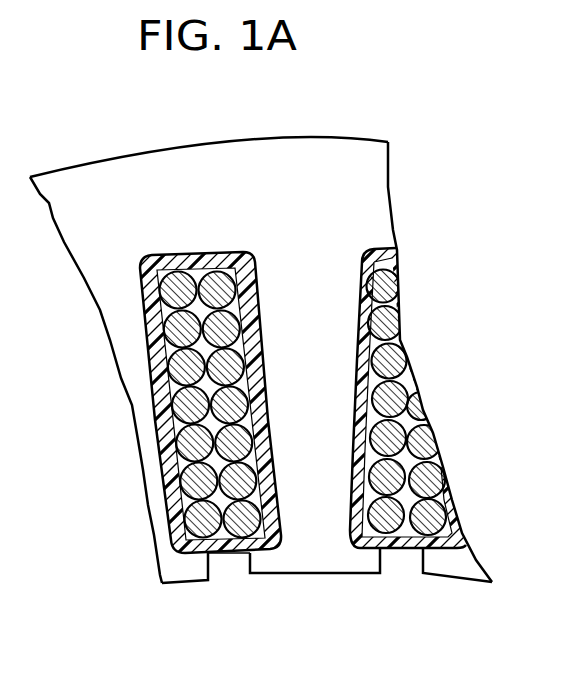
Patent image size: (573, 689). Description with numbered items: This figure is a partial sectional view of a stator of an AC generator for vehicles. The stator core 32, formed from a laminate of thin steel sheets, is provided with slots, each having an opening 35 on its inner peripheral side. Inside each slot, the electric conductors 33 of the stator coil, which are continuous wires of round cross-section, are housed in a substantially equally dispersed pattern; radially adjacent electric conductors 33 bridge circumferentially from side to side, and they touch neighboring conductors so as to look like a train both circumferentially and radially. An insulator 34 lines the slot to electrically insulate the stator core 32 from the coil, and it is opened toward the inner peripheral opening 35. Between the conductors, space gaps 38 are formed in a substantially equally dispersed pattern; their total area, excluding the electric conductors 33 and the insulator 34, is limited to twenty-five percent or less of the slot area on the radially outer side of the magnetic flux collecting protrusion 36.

The stator core 32 is at (310, 167).
The electric conductors 33 is at (176, 450).
The insulator 34 is at (147, 313).
The opening 35 is at (231, 562).
The magnetic flux collecting protrusion 36 is at (185, 571).
The space gaps 38 is at (199, 305).